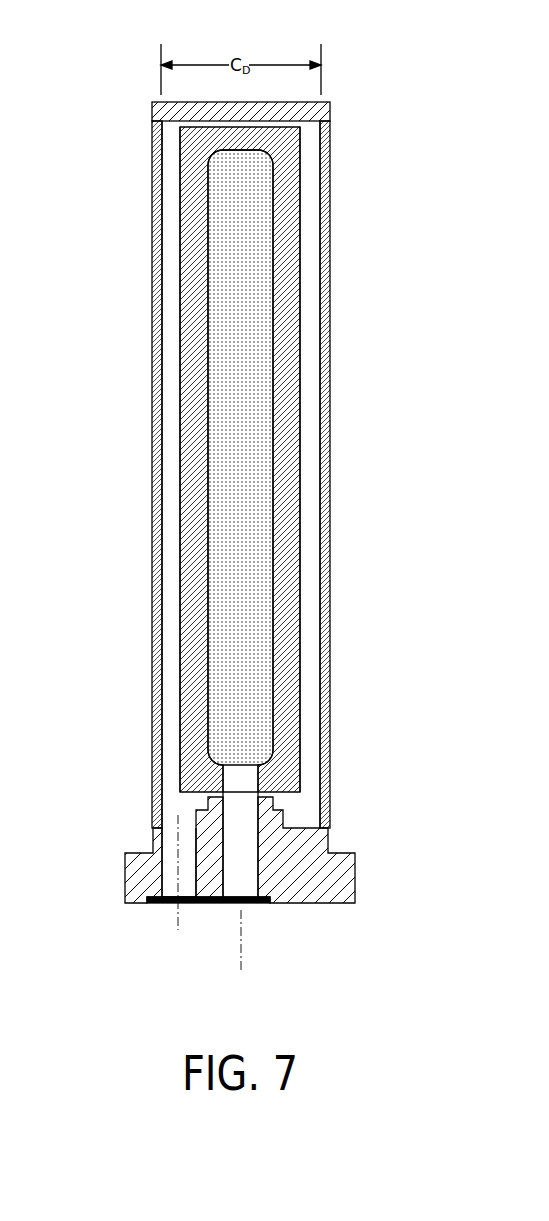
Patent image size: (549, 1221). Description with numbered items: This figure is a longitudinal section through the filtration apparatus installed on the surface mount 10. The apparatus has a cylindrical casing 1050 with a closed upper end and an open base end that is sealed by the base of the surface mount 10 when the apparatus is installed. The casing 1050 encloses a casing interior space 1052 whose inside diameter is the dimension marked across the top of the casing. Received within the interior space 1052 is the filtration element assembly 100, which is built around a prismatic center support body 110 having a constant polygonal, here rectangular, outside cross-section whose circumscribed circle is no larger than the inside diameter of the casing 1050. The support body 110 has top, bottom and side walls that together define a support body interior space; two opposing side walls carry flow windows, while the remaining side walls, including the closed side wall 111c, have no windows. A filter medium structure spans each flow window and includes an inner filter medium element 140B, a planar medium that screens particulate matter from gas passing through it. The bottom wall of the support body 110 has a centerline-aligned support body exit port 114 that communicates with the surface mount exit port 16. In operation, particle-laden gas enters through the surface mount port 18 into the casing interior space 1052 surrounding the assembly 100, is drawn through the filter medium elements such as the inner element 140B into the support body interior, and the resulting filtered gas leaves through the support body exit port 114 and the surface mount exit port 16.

The surface mount 10 is at (125, 867).
The surface mount exit port 16 is at (258, 865).
The surface mount port 18 is at (192, 865).
The filtration element assembly 100 is at (239, 462).
The center support body 110 is at (300, 207).
The closed side wall 111c is at (300, 290).
The support body exit port 114 is at (258, 792).
The inner filter medium element 140B is at (257, 627).
The cylindrical casing 1050 is at (330, 513).
The casing interior space 1052 is at (175, 530).